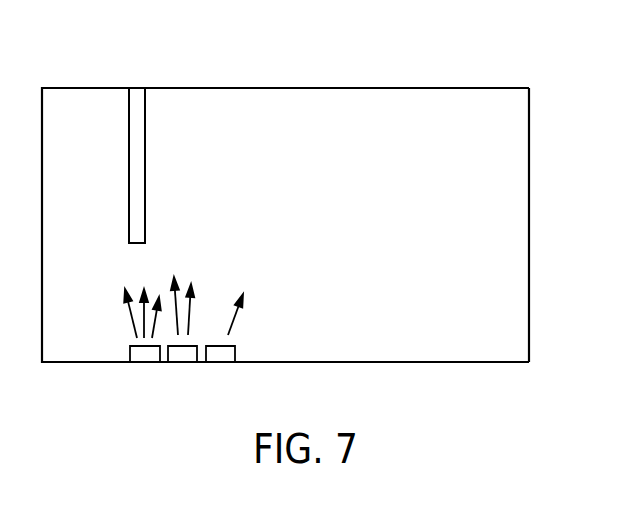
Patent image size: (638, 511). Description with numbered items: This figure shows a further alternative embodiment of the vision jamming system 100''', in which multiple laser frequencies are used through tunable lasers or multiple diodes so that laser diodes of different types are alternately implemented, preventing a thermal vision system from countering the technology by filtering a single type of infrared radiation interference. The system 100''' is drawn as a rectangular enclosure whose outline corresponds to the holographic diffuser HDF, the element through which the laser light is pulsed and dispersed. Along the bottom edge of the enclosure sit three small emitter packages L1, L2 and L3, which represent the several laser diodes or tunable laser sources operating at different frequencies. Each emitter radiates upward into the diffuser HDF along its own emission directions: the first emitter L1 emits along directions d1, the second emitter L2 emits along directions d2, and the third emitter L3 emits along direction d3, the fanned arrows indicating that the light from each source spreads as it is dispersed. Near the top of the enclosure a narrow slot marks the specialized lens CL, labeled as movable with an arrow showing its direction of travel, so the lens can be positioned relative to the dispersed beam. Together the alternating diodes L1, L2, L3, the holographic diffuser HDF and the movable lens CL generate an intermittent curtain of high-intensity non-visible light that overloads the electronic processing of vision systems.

The vision jamming system 100''' is at (280, 195).
The specialized lens CL is at (282, 44).
The holographic diffuser HDF is at (530, 213).
The first light source L1 is at (143, 363).
The second light source L2 is at (186, 363).
The third light source L3 is at (222, 363).
The emission direction of first light source d1 is at (145, 330).
The emission direction of second light source d2 is at (186, 320).
The emission direction of third light source d3 is at (236, 320).